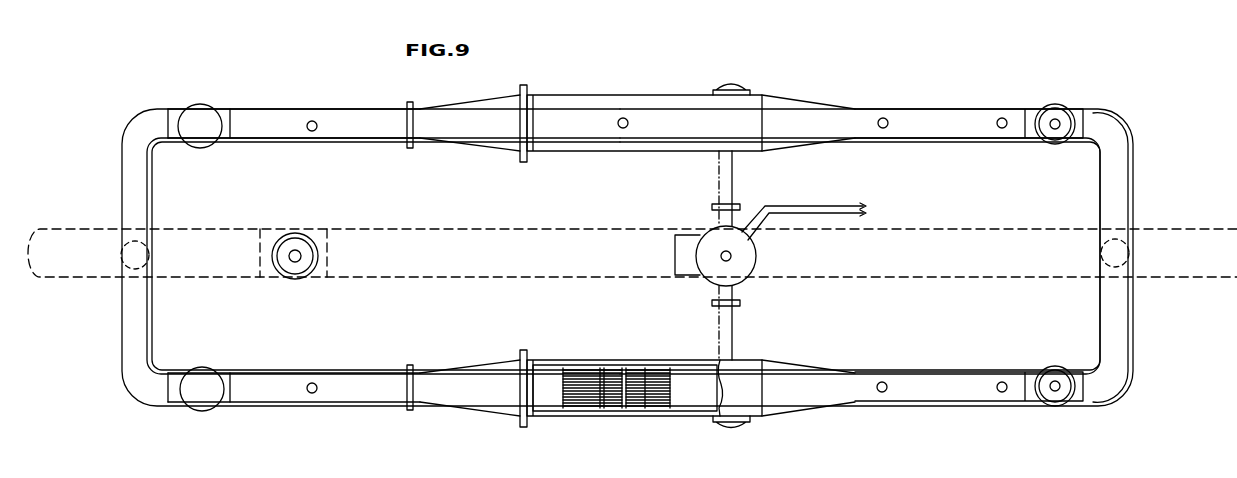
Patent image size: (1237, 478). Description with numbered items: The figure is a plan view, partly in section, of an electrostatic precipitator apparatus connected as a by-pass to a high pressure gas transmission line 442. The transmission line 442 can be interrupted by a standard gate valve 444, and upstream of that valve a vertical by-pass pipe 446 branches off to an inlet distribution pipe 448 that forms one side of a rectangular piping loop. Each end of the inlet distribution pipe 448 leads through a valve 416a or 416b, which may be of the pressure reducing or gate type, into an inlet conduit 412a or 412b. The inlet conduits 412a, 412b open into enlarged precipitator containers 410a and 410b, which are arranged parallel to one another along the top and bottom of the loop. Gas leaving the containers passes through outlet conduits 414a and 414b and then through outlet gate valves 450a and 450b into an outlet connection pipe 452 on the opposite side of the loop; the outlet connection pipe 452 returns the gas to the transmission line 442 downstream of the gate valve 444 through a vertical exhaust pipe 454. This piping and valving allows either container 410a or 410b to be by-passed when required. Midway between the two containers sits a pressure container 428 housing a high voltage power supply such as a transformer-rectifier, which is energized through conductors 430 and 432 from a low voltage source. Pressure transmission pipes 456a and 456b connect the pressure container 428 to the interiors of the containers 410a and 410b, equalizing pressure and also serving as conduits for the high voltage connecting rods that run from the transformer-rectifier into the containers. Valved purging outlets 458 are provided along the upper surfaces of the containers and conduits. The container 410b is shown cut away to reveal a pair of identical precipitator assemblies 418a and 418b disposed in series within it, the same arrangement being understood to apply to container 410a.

The precipitator container 410a is at (635, 106).
The precipitator container 410b is at (637, 386).
The inlet conduit 412a is at (339, 115).
The inlet conduit 412b is at (297, 404).
The outlet conduit 414a is at (918, 115).
The outlet conduit 414b is at (955, 372).
The valve 416a is at (199, 112).
The valve 416b is at (212, 411).
The precipitator assembly 418a is at (555, 380).
The precipitator assembly 418b is at (685, 375).
The pressure container 428 is at (755, 268).
The conductor 430 is at (840, 200).
The conductor 432 is at (848, 210).
The gas transmission line 442 is at (1203, 229).
The gate valve 444 is at (297, 233).
The by-pass pipe 446 is at (122, 264).
The inlet distribution pipe 448 is at (128, 332).
The outlet gate valve 450a is at (1060, 104).
The outlet gate valve 450b is at (1062, 366).
The outlet connection pipe 452 is at (1137, 318).
The exhaust pipe 454 is at (1100, 248).
The pressure transmission pipe 456a is at (733, 195).
The pressure transmission pipe 456b is at (733, 354).
The purging outlet 458 is at (882, 381).